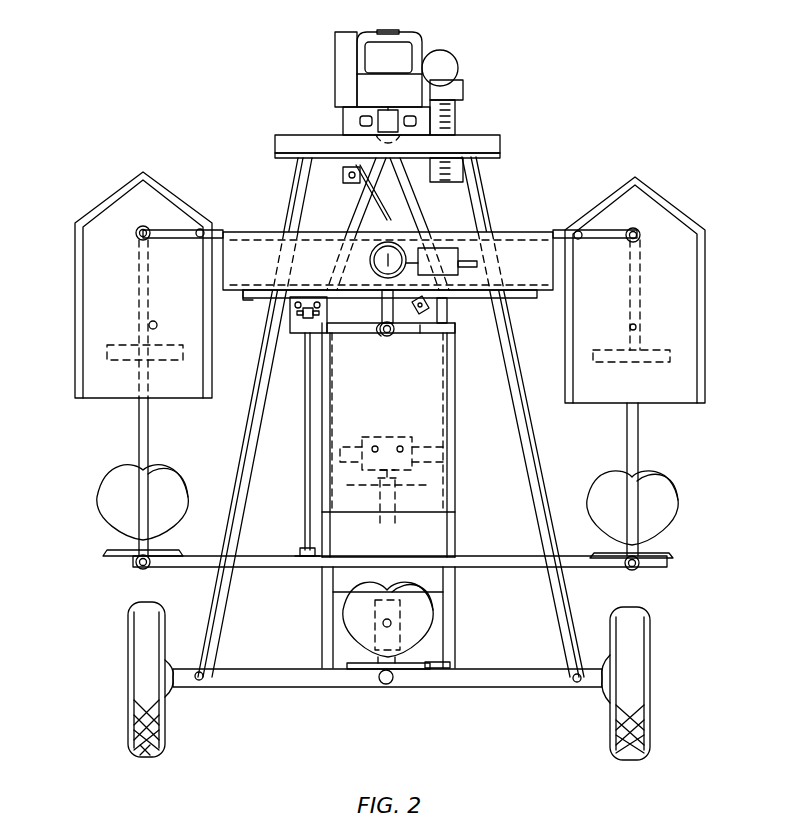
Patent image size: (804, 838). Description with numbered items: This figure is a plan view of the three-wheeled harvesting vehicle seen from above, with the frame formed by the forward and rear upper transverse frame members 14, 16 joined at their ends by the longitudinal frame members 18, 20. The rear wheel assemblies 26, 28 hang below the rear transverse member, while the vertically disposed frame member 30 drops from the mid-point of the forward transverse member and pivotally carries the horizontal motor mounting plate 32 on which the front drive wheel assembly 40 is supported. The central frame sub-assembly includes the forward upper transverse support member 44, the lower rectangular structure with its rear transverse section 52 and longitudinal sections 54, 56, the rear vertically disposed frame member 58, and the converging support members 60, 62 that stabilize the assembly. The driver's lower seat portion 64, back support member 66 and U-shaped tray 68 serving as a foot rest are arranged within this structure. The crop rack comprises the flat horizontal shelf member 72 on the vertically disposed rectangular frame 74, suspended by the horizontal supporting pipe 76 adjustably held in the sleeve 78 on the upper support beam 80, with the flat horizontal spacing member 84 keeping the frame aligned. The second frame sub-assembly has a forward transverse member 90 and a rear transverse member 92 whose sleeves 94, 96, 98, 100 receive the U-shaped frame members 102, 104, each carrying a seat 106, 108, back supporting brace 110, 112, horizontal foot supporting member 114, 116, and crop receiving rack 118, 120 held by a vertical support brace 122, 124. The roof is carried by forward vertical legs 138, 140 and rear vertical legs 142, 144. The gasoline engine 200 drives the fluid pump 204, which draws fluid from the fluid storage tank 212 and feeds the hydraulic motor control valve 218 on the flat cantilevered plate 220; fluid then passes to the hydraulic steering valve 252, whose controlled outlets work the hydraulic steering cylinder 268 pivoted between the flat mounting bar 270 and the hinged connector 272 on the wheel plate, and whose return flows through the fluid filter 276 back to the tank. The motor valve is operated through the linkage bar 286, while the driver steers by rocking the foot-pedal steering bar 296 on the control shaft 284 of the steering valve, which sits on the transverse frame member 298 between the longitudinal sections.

The forward upper transverse frame member 14 is at (278, 140).
The rear upper transverse frame member 16 is at (276, 686).
The longitudinally oriented frame member 18 is at (256, 412).
The longitudinally oriented frame member 20 is at (534, 436).
The rear wheel assembly 26 is at (124, 712).
The rear wheel assembly 28 is at (645, 730).
The vertically disposed frame member 30 is at (352, 136).
The horizontal motor mounting plate 32 is at (465, 176).
The front drive wheel assembly 40 is at (405, 34).
The forward upper transverse support member 44 is at (252, 296).
The rear transverse section 52 is at (358, 682).
The longitudinal section 54 is at (322, 608).
The longitudinal section 56 is at (446, 600).
The vertically disposed frame member 58 is at (392, 684).
The converging support member 60 is at (430, 226).
The converging support member 62 is at (354, 216).
The lower seat portion 64 is at (436, 620).
The back support member 66 is at (445, 661).
The U-shaped tray 68 is at (436, 556).
The flat horizontal shelf member 72 is at (440, 408).
The vertically disposed rectangular frame 74 is at (420, 331).
The horizontal supporting pipe 76 is at (392, 334).
The sleeve 78 is at (378, 340).
The upper support beam 80 is at (382, 314).
The flat horizontal spacing member 84 is at (450, 320).
The forward transverse member 90 is at (605, 232).
The rear transverse member 92 is at (193, 568).
The sleeve 94 is at (138, 228).
The sleeve 96 is at (641, 237).
The sleeve 98 is at (140, 568).
The sleeve 100 is at (638, 568).
The U-shaped frame member 102 is at (140, 420).
The U-shaped frame member 104 is at (639, 440).
The seat 106 is at (122, 468).
The seat 108 is at (680, 494).
The back supporting brace 110 is at (118, 545).
The back supporting brace 112 is at (670, 556).
The horizontal foot supporting member 114 is at (121, 345).
The horizontal foot supporting member 116 is at (672, 350).
The crop receiving rack 118 is at (84, 248).
The crop receiving rack 120 is at (702, 312).
The vertical support brace 122 is at (150, 322).
The vertical support brace 124 is at (630, 324).
The forward vertical leg 138 is at (202, 229).
The forward vertical leg 140 is at (580, 230).
The rear vertical leg 142 is at (197, 681).
The rear vertical leg 144 is at (580, 683).
The gasoline engine 200 is at (337, 62).
The fluid pump 204 is at (378, 116).
The fluid storage tank 212 is at (272, 246).
The hydraulic motor control valve 218 is at (296, 314).
The flat cantilevered plate 220 is at (318, 322).
The hydraulic steering valve 252 is at (413, 438).
The hydraulic steering cylinder 268 is at (386, 214).
The flat mounting bar 270 is at (430, 306).
The hinged connector 272 is at (343, 175).
The fluid filter 276 is at (450, 252).
The control shaft 284 is at (397, 516).
The linkage bar 286 is at (305, 474).
The foot-pedal steering bar 296 is at (380, 512).
The transverse frame member 298 is at (342, 447).